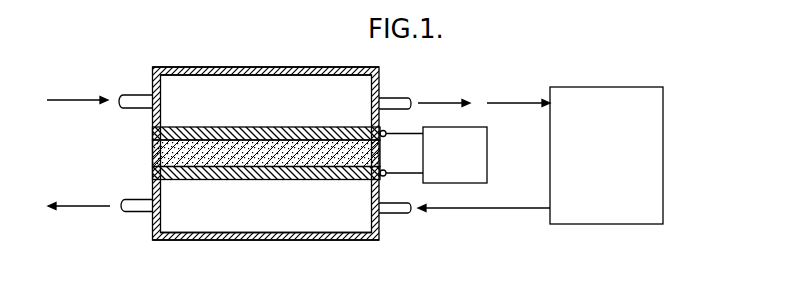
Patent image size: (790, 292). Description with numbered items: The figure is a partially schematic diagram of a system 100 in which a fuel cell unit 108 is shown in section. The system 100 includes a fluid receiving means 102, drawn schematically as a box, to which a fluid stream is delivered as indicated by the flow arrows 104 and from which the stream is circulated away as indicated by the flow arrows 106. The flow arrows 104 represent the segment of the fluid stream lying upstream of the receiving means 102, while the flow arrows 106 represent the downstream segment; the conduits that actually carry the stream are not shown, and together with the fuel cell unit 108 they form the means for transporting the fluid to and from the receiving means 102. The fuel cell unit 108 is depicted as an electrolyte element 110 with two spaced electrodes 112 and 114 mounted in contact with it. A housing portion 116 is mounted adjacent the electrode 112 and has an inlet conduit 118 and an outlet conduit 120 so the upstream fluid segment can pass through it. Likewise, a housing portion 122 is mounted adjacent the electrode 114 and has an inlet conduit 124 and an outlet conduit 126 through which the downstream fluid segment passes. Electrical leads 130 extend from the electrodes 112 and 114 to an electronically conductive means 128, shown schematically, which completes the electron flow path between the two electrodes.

The system 100 is at (497, 70).
The fluid receiving means 102 is at (610, 87).
The flow arrows 104 is at (68, 98).
The flow arrows 106 is at (505, 210).
The fuel cell unit 108 is at (235, 49).
The electrolyte element 110 is at (157, 152).
The electrode 112 is at (280, 127).
The electrode 114 is at (275, 179).
The housing portion 116 is at (312, 67).
The inlet conduit 118 is at (133, 94).
The outlet conduit 120 is at (402, 97).
The housing portion 122 is at (283, 241).
The inlet conduit 124 is at (395, 214).
The outlet conduit 126 is at (135, 213).
The electronically conductive means 128 is at (487, 155).
The electrical leads 130 is at (403, 146).